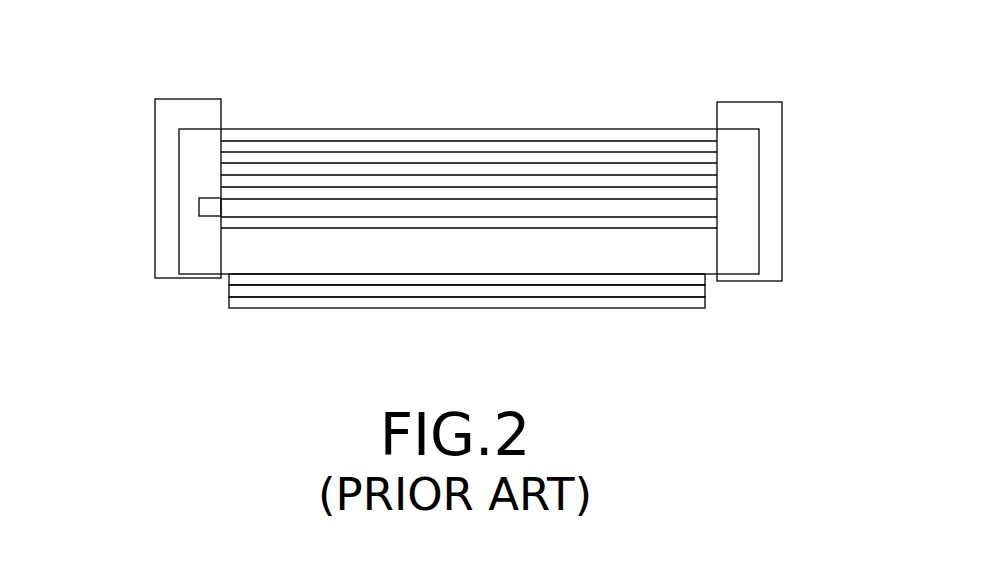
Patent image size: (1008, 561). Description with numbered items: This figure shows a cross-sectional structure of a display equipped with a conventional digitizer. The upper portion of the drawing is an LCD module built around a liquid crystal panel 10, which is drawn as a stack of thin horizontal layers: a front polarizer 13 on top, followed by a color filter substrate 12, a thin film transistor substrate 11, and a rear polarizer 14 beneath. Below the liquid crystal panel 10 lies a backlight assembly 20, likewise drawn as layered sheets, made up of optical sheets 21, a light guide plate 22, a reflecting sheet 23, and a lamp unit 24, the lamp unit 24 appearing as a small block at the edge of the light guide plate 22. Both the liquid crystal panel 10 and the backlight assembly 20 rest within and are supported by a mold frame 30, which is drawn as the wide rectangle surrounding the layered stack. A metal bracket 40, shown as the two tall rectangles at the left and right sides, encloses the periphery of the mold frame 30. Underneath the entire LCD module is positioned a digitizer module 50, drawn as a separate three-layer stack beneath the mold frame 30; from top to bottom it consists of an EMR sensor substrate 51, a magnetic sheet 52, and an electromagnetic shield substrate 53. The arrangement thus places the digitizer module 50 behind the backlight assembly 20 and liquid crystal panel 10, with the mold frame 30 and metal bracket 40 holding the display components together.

The liquid crystal panel 10 is at (555, 179).
The thin film transistor substrate 11 is at (712, 160).
The color filter substrate 12 is at (712, 148).
The front polarizer 13 is at (710, 133).
The rear polarizer 14 is at (708, 172).
The backlight assembly 20 is at (380, 216).
The optical sheets 21 is at (225, 188).
The light guide plate 22 is at (227, 206).
The reflecting sheet 23 is at (227, 222).
The lamp unit 24 is at (205, 207).
The mold frame 30 is at (740, 255).
The metal bracket 40 is at (750, 108).
The digitizer module 50 is at (529, 331).
The EMR sensor substrate 51 is at (713, 281).
The magnetic sheet 52 is at (710, 293).
The electromagnetic shield substrate 53 is at (698, 305).